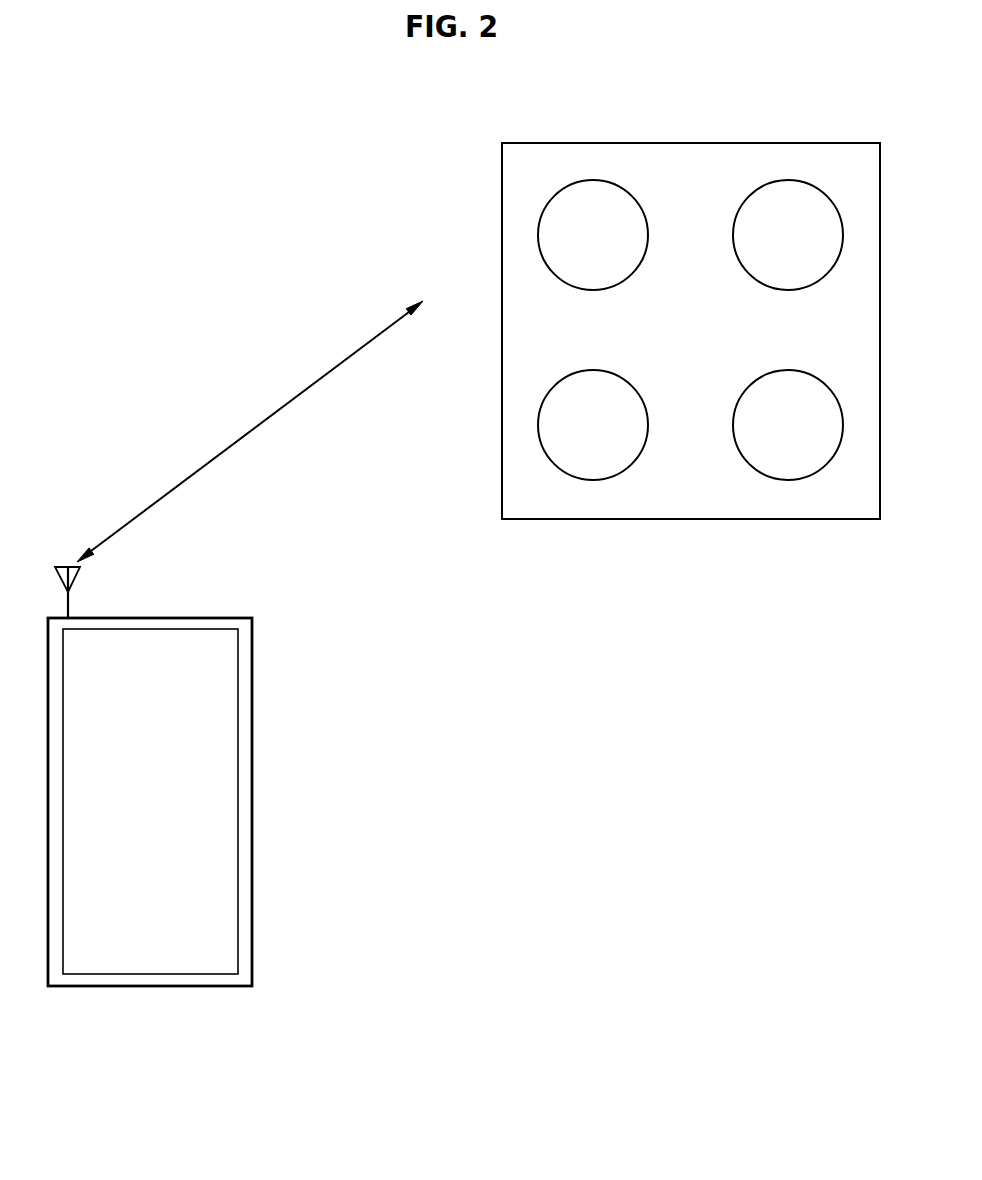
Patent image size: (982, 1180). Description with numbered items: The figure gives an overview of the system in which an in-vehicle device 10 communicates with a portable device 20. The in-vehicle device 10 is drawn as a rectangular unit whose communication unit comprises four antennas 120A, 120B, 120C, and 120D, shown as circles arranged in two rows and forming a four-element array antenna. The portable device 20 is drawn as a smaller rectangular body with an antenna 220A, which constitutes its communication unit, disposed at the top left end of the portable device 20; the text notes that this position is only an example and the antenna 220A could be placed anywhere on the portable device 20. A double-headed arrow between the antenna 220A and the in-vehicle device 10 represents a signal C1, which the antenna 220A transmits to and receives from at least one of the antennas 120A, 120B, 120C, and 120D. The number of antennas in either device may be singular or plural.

The in-vehicle device 10 is at (845, 143).
The antenna 120A is at (648, 180).
The antenna 120B is at (843, 180).
The antenna 120C is at (637, 386).
The antenna 120D is at (832, 386).
The signal C1 is at (250, 432).
The antenna 220A is at (61, 566).
The portable device 20 is at (150, 987).